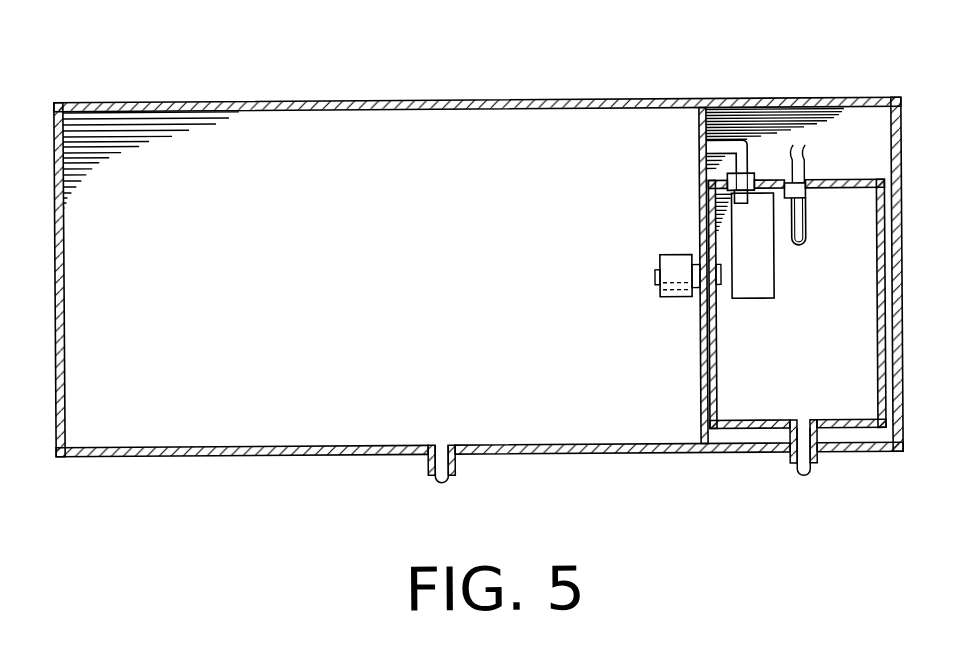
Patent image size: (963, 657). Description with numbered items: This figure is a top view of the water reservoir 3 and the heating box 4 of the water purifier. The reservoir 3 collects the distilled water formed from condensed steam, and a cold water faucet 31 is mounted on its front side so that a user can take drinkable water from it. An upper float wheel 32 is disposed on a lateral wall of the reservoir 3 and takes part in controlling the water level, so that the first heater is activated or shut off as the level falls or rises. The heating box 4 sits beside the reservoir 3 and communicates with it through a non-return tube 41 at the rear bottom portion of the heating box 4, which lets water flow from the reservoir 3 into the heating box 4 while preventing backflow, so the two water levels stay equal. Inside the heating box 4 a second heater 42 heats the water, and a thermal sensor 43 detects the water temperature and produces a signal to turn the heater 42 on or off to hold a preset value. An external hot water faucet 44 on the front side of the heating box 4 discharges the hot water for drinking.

The water reservoir 3 is at (614, 136).
The heating box 4 is at (749, 400).
The cold water faucet 31 is at (427, 475).
The upper float wheel 32 is at (661, 289).
The non-return tube 41 is at (742, 143).
The second heater 42 is at (766, 279).
The thermal sensor 43 is at (805, 234).
The hot water faucet 44 is at (802, 460).